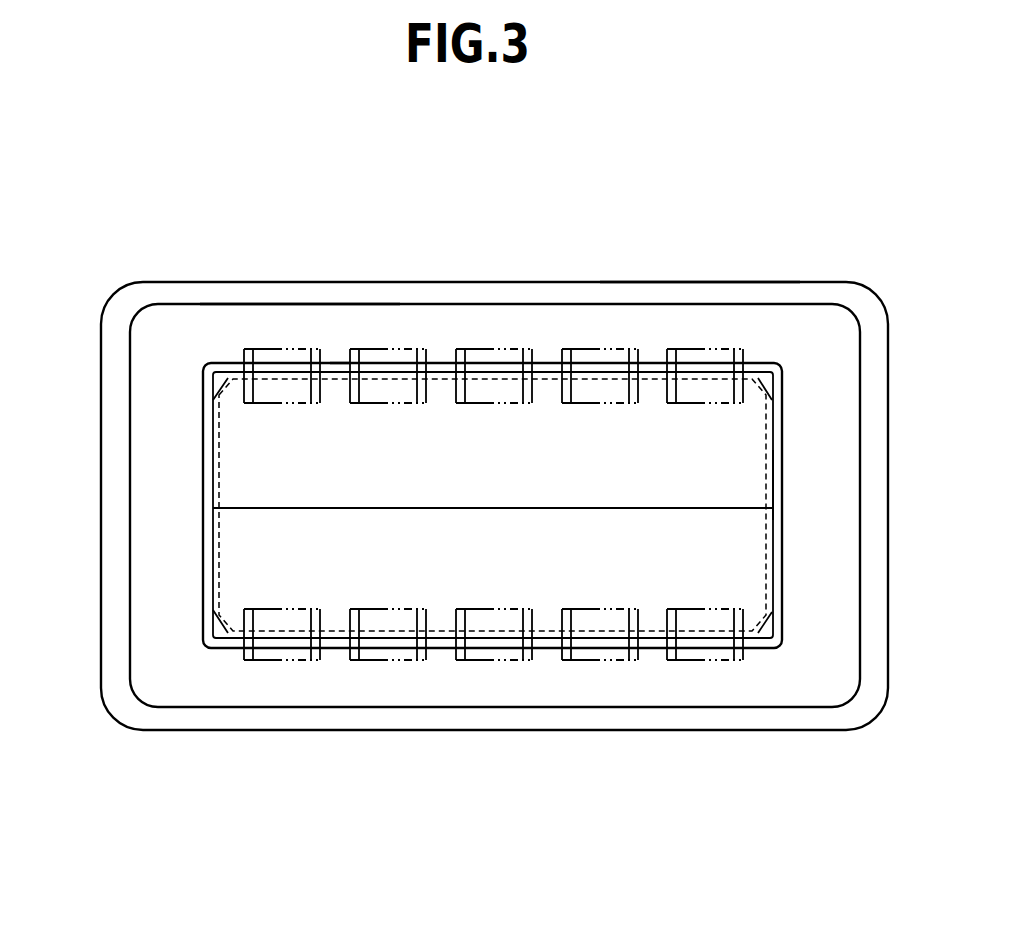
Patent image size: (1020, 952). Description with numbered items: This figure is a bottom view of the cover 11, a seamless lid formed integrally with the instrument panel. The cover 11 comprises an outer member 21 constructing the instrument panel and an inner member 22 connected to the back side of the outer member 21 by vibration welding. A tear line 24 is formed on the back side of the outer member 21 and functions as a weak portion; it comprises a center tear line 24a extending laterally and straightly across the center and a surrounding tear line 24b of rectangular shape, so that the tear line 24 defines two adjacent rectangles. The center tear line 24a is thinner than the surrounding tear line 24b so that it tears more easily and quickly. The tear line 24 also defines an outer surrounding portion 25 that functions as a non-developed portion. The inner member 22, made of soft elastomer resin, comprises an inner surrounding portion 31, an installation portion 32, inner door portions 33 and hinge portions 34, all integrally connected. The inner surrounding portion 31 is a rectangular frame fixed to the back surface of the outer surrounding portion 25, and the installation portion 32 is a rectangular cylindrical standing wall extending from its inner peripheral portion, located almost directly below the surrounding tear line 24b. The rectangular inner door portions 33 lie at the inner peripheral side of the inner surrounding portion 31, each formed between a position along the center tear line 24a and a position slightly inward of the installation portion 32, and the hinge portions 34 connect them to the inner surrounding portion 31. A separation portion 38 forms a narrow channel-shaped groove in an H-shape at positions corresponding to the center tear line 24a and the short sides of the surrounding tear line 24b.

The cover 11 is at (199, 208).
The outer member 21 is at (113, 472).
The inner member 22 is at (145, 523).
The tear line 24 is at (409, 520).
The center tear line 24a is at (408, 507).
The surrounding tear line 24b is at (773, 470).
The outer surrounding portion 25 is at (690, 294).
The inner surrounding portion 31 is at (302, 318).
The installation portion 32 is at (335, 370).
The inner door portion 33 is at (232, 425).
The hinge portion 34 is at (270, 350).
The separation portion 38 is at (340, 507).